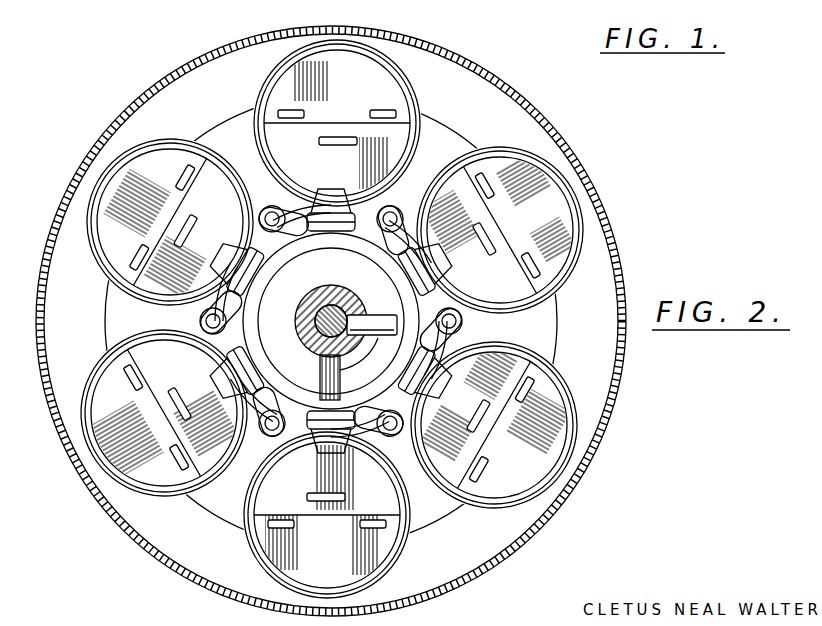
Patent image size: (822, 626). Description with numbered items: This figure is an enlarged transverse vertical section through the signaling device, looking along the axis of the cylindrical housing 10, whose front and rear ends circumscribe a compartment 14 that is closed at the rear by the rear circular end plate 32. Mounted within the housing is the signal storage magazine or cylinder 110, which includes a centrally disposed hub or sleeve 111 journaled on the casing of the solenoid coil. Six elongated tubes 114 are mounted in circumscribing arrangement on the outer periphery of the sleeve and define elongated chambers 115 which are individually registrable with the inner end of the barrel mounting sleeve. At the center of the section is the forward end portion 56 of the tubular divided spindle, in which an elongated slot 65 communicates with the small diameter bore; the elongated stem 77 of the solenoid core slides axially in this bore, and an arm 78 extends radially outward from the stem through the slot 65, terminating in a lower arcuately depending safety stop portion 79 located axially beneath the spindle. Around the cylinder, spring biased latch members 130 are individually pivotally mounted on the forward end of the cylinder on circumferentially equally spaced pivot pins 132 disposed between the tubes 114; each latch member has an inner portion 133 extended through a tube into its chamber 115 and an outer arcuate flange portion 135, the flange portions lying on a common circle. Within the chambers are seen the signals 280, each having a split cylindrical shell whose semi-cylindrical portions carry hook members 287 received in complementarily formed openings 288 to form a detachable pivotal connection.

The cylindrical housing 10 is at (471, 55).
The compartment 14 is at (495, 112).
The rear circular end plate 32 is at (464, 102).
The front end portion of spindle 56 is at (321, 289).
The elongated slot 65 is at (367, 316).
The stem 77 is at (302, 322).
The arm 78 is at (392, 316).
The safety stop portion 79 is at (322, 392).
The signal storage cylinder 110 is at (550, 160).
The hub 111 is at (296, 362).
The elongated tubes 114 is at (330, 48).
The elongated chambers 115 is at (580, 222).
The spring biased latch members 130 is at (462, 258).
The pivot pins 132 is at (472, 166).
The inner portions 133 is at (350, 197).
The outer arcuate flange portions 135 is at (330, 240).
The signal 280 is at (364, 50).
The hook members 287 is at (135, 245).
The openings 288 is at (303, 116).